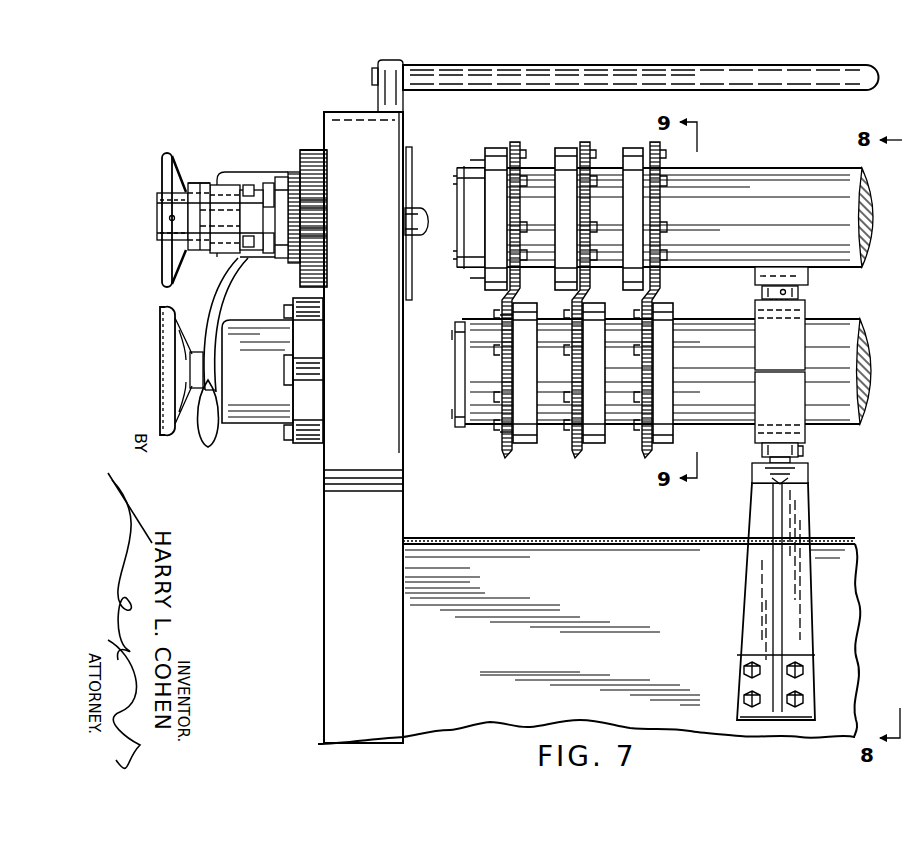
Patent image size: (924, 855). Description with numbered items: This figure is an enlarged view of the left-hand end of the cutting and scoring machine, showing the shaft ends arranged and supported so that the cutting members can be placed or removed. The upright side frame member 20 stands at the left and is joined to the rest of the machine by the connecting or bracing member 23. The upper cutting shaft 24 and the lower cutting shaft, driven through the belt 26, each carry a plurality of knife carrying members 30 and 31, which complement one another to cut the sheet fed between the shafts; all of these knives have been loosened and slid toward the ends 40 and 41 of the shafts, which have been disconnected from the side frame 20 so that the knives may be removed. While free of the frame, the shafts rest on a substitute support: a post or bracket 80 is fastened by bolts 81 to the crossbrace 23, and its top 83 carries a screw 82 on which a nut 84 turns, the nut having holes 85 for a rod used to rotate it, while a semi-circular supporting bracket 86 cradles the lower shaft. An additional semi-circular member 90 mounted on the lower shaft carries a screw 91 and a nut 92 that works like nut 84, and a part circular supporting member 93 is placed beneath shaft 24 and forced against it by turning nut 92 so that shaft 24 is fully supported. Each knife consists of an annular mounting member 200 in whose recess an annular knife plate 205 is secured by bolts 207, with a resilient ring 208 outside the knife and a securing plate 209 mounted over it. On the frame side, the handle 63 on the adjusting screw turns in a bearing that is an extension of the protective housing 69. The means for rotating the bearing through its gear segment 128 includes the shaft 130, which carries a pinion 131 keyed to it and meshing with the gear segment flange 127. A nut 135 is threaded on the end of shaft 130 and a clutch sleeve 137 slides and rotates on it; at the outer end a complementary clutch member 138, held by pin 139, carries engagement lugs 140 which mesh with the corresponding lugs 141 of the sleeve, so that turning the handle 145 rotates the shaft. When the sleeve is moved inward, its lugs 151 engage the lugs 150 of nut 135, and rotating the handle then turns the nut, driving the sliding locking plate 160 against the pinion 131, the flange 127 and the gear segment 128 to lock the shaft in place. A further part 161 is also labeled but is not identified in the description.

The side frame member 20 is at (330, 521).
The connecting or bracing member 23 is at (840, 622).
The cutting shaft 24 is at (806, 168).
The belt 26 is at (848, 320).
The knife carrying member 30 is at (500, 145).
The knife carrying member 31 is at (519, 446).
The end of shaft 40 is at (463, 428).
The end of shaft 41 is at (462, 170).
The handle 63 is at (168, 160).
The covering or protective housing 69 is at (258, 322).
The post or bracket 80 is at (808, 508).
The bolts 81 is at (803, 698).
The screw 82 is at (790, 460).
The top of post 83 is at (808, 468).
The nut 84 is at (800, 452).
The holes 85 is at (777, 450).
The semi-circular supporting bracket 86 is at (762, 413).
The additional semi-circular member 90 is at (757, 303).
The screw 91 is at (793, 309).
The nut 92 is at (799, 292).
The part circular supporting member 93 is at (808, 275).
The flange 127 is at (314, 140).
The gear segment 128 is at (316, 160).
The shaft 130 is at (157, 212).
The pinion 131 is at (318, 203).
The nut 135 is at (279, 178).
The clutch sleeve 137 is at (228, 188).
The complementary clutch member 138 is at (195, 185).
The pin 139 is at (170, 219).
The engagement lugs 140 is at (203, 195).
The engagement lugs 141 is at (207, 218).
The handle 145 is at (218, 280).
The engagement lugs 150 is at (268, 183).
The lugs 151 is at (249, 185).
The sliding locking plate 160 is at (293, 170).
The gear teeth 161 is at (318, 230).
The annular mounting member 200 is at (490, 148).
The annular knife plate 205 is at (513, 145).
The bolts 207 is at (524, 178).
The resilient annular ring 208 is at (517, 150).
The securing plate 209 is at (521, 166).